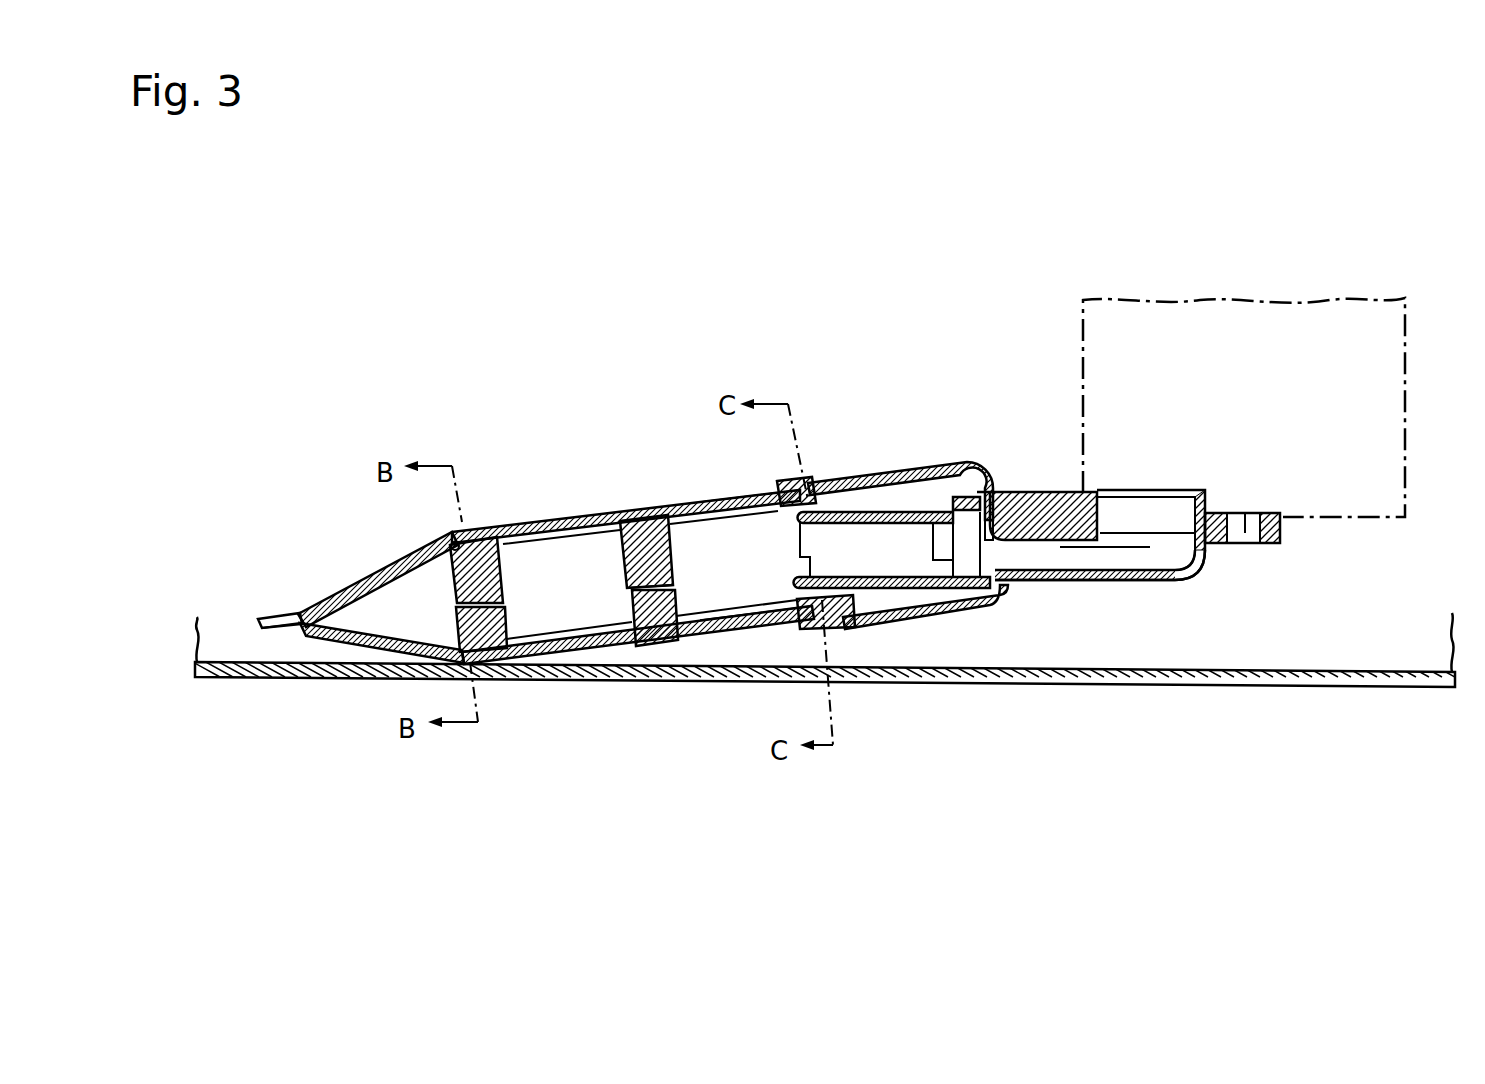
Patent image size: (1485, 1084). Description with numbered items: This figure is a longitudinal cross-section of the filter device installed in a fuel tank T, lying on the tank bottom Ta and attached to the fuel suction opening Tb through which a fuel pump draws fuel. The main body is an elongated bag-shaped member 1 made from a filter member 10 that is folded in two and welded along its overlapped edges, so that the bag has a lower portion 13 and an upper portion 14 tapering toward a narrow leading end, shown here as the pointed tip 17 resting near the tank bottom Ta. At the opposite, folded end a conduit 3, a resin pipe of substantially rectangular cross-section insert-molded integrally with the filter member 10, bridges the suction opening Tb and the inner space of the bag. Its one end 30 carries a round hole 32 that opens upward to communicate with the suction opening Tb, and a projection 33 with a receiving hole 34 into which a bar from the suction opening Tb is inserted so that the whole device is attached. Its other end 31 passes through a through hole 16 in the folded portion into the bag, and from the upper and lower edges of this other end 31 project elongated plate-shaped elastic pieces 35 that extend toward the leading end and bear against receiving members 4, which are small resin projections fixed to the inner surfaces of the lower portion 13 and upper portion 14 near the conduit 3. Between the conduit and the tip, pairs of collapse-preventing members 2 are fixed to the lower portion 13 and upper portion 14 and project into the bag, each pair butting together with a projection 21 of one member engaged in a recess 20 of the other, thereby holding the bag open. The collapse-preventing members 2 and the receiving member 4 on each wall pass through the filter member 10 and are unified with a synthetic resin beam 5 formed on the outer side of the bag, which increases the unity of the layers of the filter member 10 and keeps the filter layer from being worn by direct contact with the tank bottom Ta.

The bag-shaped member 1 is at (323, 658).
The collapse-preventing members 2 is at (484, 530).
The conduit 3 is at (1095, 585).
The receiving members 4 is at (818, 492).
The beam 5 is at (572, 520).
The filter member 10 is at (350, 590).
The lower portion 13 is at (742, 652).
The upper portion 14 is at (702, 488).
The through hole 16 is at (998, 510).
The tip end 17 is at (298, 616).
The recess 20 is at (505, 620).
The projection 21 is at (456, 597).
The one end 30 is at (1195, 490).
The other end 31 is at (975, 460).
The round hole 32 is at (1165, 490).
The projection 33 is at (1285, 535).
The receiving hole 34 is at (1247, 535).
The elastic pieces 35 is at (893, 518).
The fuel tank T is at (642, 316).
The tank bottom Ta is at (1352, 688).
The fuel suction opening Tb is at (1127, 430).